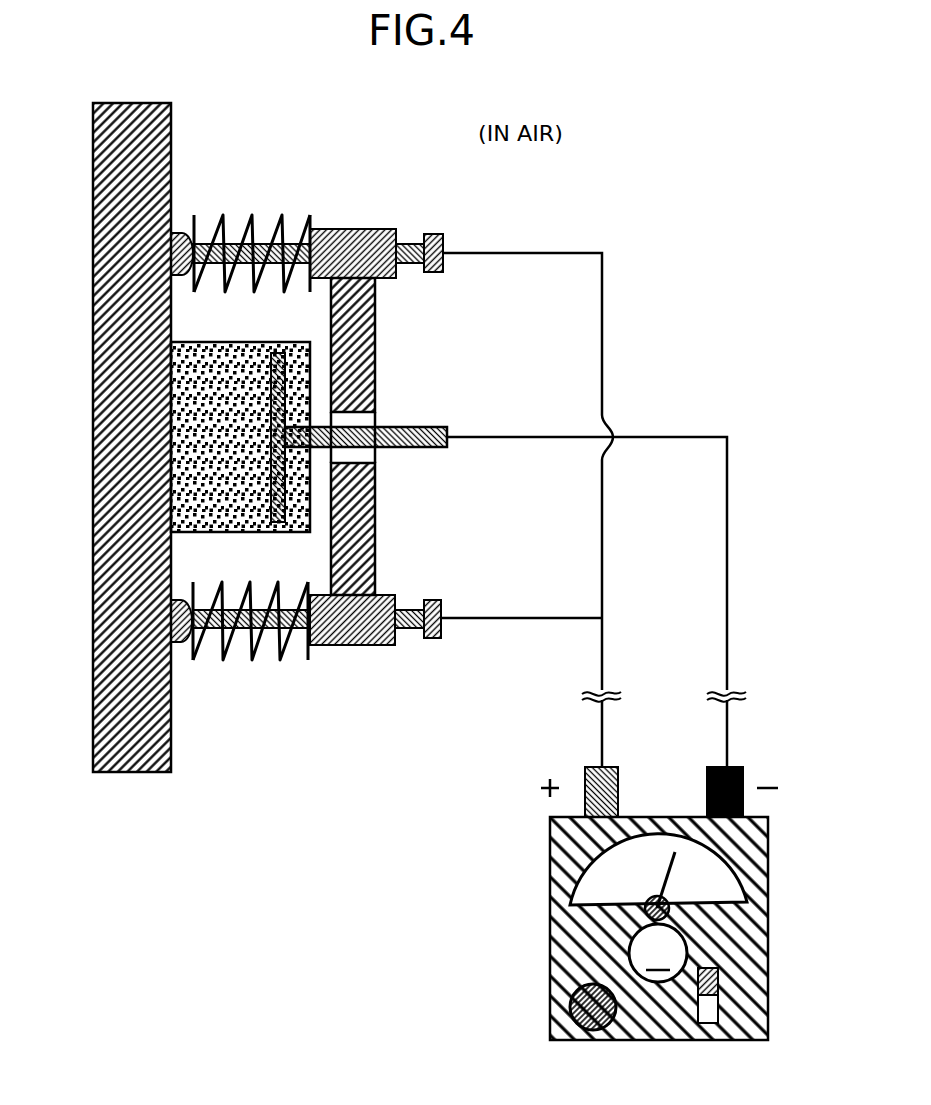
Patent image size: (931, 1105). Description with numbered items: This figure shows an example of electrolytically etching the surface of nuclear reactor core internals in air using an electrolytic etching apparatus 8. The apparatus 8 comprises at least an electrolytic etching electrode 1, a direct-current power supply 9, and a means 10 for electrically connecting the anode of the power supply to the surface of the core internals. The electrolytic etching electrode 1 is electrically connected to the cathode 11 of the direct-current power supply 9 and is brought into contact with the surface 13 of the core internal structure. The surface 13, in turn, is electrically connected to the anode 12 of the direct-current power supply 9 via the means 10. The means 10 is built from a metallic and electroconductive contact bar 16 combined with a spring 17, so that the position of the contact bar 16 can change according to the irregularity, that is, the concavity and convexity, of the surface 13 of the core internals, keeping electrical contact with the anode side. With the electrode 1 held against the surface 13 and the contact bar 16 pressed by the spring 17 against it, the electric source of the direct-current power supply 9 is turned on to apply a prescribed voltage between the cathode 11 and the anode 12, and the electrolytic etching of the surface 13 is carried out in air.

The electrolytic etching electrode 1 is at (200, 342).
The electrolytic etching apparatus 8 is at (716, 322).
The direct-current power supply 9 is at (550, 943).
The means for electrically connecting the anode to the surface of core internals 10 is at (268, 218).
The cathode 11 is at (743, 767).
The anode 12 is at (585, 767).
The surface of the core internals 13 is at (123, 567).
The contact bar 16 is at (179, 645).
The spring 17 is at (255, 645).